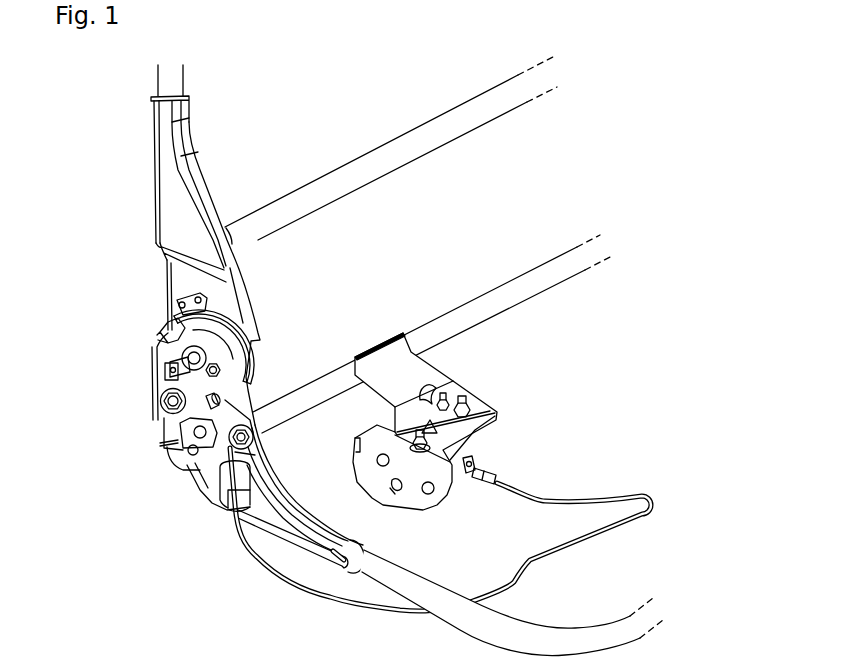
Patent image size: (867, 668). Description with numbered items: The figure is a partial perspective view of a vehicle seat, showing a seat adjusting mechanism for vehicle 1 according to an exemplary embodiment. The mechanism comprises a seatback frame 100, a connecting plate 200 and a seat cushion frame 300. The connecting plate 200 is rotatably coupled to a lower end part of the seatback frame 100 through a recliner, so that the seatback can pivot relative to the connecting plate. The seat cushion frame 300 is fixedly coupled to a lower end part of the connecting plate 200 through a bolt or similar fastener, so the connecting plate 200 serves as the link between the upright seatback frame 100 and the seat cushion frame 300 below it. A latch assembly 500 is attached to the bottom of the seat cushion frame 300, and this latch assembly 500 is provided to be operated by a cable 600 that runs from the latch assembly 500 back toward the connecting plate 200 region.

The seat adjusting mechanism for vehicle 1 is at (122, 316).
The seatback frame 100 is at (161, 214).
The connecting plate 200 is at (157, 397).
The seat cushion frame 300 is at (203, 487).
The latch assembly 500 is at (476, 441).
The cable 600 is at (644, 520).